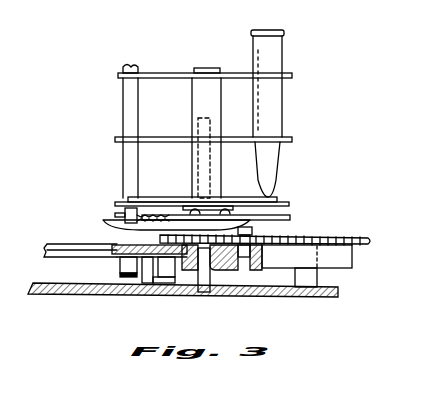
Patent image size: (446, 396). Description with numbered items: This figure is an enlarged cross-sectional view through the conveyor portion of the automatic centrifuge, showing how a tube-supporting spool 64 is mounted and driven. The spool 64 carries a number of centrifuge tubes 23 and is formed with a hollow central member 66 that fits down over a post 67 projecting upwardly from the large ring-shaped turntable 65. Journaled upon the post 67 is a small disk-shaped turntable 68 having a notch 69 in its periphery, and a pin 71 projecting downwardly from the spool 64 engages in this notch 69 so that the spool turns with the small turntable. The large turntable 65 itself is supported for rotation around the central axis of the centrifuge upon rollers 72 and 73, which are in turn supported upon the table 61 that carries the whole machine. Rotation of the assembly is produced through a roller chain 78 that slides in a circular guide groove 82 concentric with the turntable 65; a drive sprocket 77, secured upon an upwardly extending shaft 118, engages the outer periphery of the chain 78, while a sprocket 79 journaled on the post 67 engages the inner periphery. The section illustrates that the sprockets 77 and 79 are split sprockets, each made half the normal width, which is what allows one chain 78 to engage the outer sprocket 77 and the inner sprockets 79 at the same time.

The centrifuge tubes 23 is at (283, 61).
The table 61 is at (300, 297).
The tube-supporting spool 64 is at (117, 139).
The ring-shaped turntable 65 is at (75, 243).
The hollow central member 66 is at (195, 98).
The post 67 is at (196, 157).
The disk-shaped turntable 68 is at (291, 217).
The notch 69 is at (125, 211).
The pin 71 is at (128, 224).
The roller 72 is at (120, 266).
The roller 73 is at (165, 270).
The split drive sprocket 77 is at (369, 240).
The roller chain 78 is at (245, 232).
The split sprocket 79 is at (162, 238).
The circular guide groove 82 is at (243, 262).
The upwardly extending shaft 118 is at (318, 278).